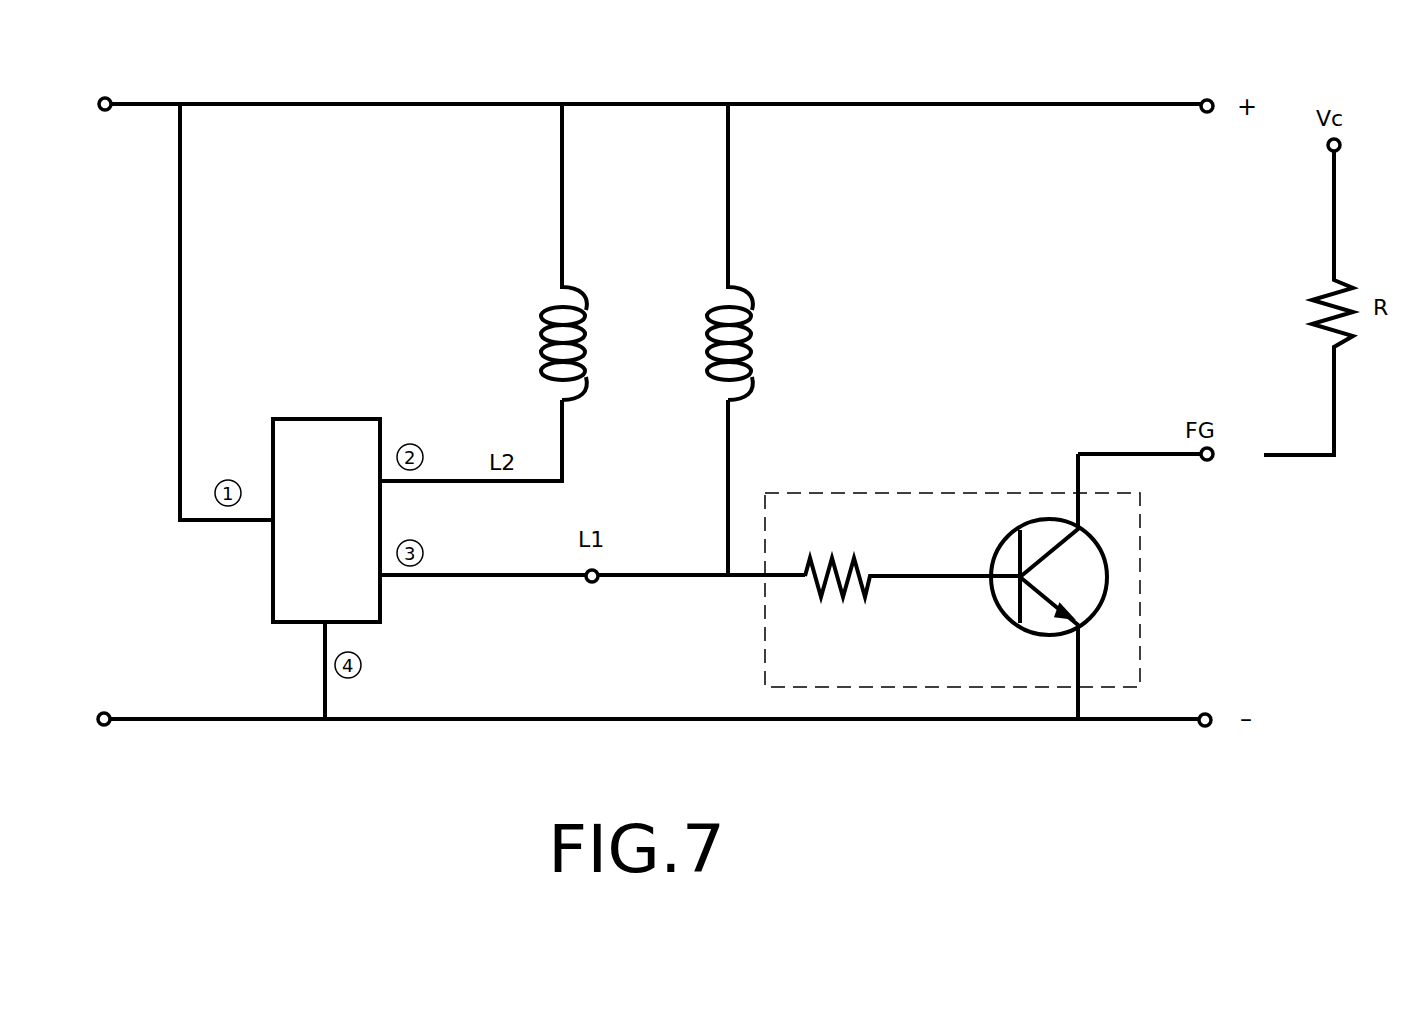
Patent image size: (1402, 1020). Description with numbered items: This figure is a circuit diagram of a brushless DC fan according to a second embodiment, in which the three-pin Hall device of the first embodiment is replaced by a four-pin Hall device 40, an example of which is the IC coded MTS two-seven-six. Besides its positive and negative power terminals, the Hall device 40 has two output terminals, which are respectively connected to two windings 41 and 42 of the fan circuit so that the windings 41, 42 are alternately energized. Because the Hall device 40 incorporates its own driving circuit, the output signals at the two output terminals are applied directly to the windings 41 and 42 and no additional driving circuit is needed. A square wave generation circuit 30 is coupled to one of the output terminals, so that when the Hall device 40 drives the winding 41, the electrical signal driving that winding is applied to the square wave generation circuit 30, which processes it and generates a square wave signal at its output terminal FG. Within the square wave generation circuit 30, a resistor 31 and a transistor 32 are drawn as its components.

The square wave generation circuit 30 is at (1127, 552).
The resistor 31 is at (912, 597).
The transistor 32 is at (1034, 586).
The 4-pin Hall device 40 is at (293, 601).
The winding 41 is at (588, 252).
The winding 42 is at (753, 252).